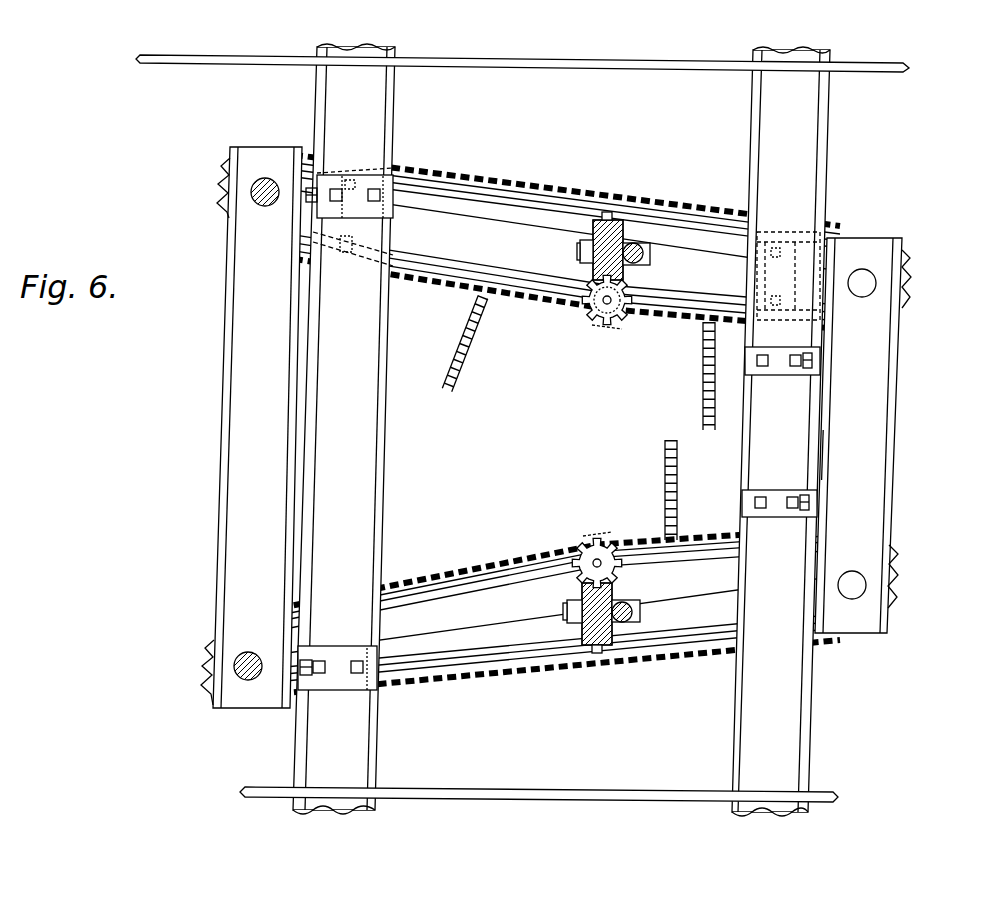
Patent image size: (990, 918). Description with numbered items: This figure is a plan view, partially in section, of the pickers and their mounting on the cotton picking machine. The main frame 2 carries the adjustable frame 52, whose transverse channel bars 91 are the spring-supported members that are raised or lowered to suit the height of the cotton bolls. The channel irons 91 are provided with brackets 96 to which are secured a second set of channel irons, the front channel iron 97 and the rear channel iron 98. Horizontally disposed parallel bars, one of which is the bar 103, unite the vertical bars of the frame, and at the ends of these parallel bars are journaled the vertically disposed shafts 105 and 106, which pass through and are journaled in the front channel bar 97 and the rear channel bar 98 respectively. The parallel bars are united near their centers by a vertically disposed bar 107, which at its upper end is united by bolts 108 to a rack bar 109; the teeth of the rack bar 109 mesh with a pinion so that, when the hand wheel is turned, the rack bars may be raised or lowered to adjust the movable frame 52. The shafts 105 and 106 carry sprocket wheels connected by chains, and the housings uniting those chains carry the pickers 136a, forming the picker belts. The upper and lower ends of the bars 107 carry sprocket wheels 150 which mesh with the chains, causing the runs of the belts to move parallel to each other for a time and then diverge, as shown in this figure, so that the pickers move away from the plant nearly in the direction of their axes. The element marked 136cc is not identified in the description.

The frame 2 is at (575, 70).
The adjustable frame 52 is at (847, 455).
The transverse channel bars 91 is at (561, 430).
The brackets 96 is at (373, 175).
The front channel iron 97 is at (877, 413).
The rear channel iron 98 is at (236, 432).
The horizontally disposed parallel bar 103 is at (503, 222).
The vertically disposed shaft 105 is at (862, 283).
The vertically disposed shaft 106 is at (268, 207).
The vertically disposed bar 107 is at (591, 268).
The bolts 108 is at (653, 265).
The rack bar 109 is at (640, 294).
The rack 136cc is at (462, 387).
The pickers 136a is at (706, 425).
The sprocket wheels 150 is at (600, 326).